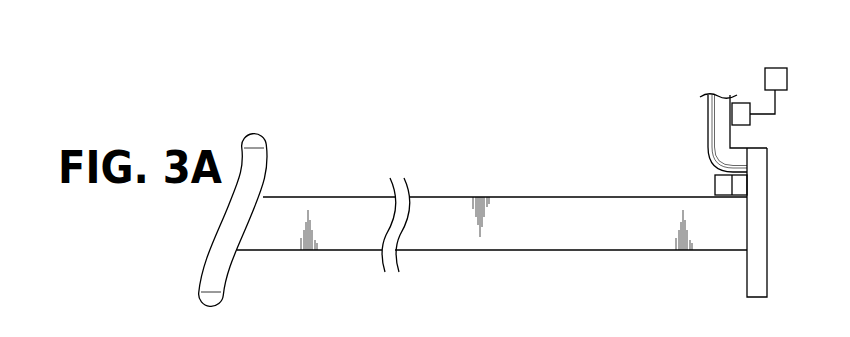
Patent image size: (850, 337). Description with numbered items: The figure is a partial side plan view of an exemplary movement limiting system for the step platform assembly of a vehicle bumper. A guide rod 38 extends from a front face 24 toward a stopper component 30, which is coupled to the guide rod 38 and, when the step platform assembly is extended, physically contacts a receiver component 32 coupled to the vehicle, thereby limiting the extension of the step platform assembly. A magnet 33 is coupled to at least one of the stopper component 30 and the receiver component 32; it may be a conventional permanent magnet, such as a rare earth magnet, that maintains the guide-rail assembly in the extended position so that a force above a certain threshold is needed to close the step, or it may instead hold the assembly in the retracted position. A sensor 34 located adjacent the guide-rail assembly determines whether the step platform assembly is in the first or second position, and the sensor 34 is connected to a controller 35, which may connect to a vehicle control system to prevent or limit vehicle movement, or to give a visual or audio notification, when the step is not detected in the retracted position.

The front face 24 is at (208, 227).
The stopper component 30 is at (766, 225).
The receiver component 32 is at (718, 127).
The magnet 33 is at (715, 187).
The sensor 34 is at (740, 103).
The controller 35 is at (777, 68).
The guide rod 38 is at (445, 228).